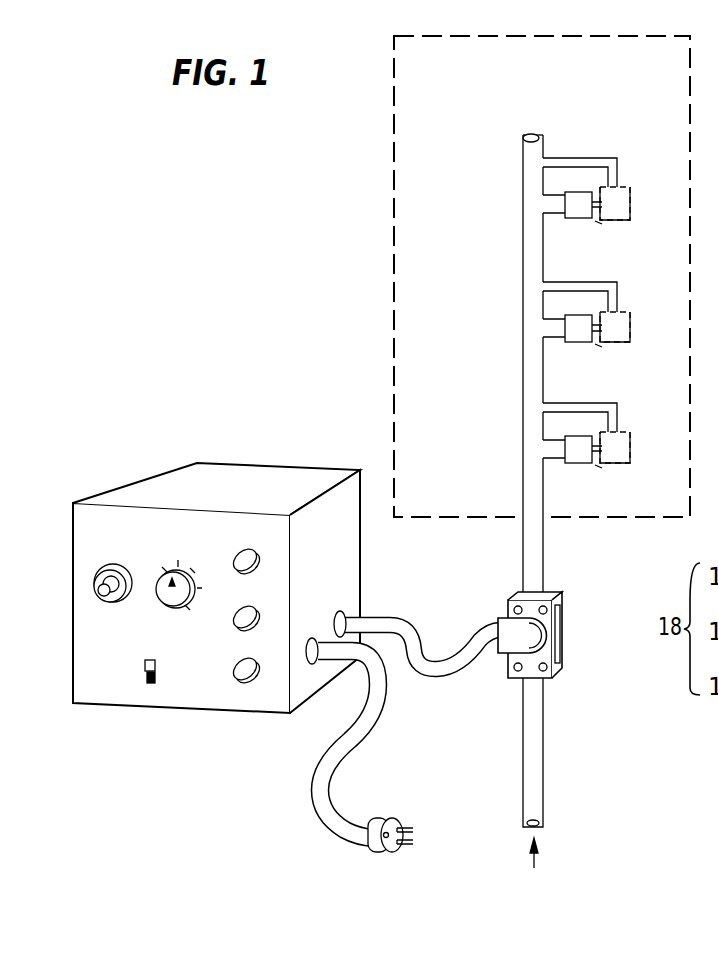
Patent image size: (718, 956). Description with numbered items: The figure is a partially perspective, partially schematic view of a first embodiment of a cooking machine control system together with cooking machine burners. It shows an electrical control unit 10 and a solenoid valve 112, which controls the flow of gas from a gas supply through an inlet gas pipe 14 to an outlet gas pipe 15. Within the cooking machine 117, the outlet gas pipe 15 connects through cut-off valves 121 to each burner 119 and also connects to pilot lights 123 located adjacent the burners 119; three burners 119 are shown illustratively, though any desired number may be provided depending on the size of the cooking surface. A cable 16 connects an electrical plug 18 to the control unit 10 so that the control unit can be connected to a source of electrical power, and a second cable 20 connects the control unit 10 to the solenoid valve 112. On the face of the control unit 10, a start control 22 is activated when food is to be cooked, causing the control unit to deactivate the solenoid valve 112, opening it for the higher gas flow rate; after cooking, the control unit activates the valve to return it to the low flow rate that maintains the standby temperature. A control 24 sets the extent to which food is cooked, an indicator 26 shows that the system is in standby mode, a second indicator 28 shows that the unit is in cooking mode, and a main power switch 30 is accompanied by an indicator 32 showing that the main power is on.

The electrical control unit 10 is at (362, 547).
The inlet gas pipe 14 is at (530, 733).
The outlet gas pipe 15 is at (537, 553).
The cable 16 is at (363, 732).
The electrical plug 18 is at (387, 817).
The cable 20 is at (393, 617).
The start control 22 is at (112, 565).
The control 24 is at (183, 570).
The indicator 26 is at (257, 553).
The second indicator 28 is at (258, 613).
The main power switch 30 is at (143, 668).
The indicator 32 is at (233, 673).
The solenoid valve 112 is at (511, 600).
The cooking machine 117 is at (394, 316).
The burner 119 is at (625, 223).
The cut-off valve 121 is at (578, 219).
The pilot light 123 is at (617, 172).